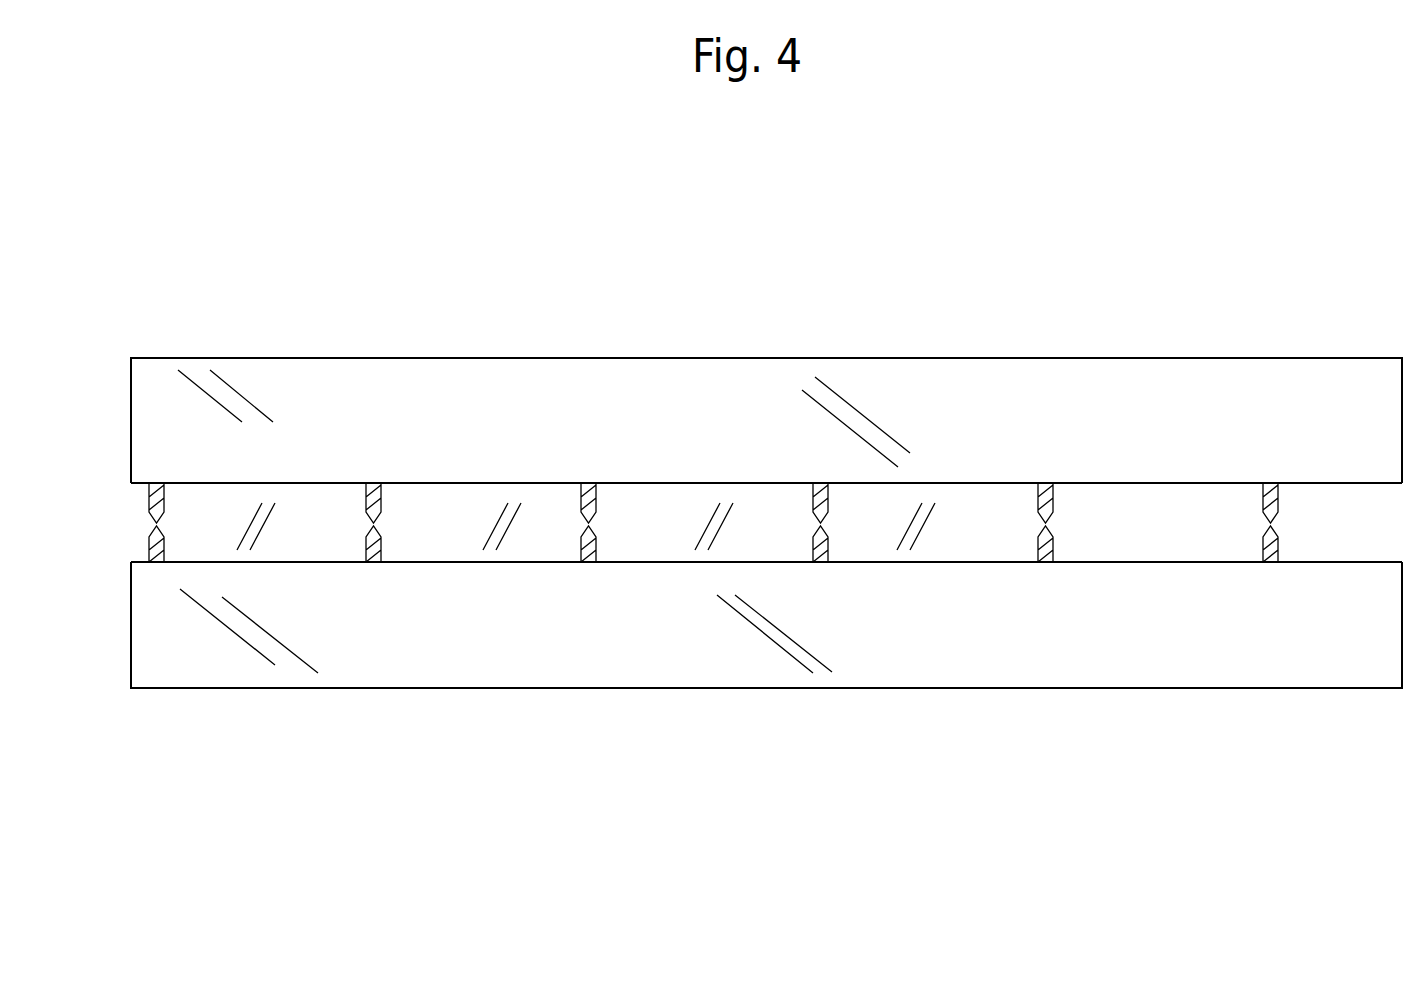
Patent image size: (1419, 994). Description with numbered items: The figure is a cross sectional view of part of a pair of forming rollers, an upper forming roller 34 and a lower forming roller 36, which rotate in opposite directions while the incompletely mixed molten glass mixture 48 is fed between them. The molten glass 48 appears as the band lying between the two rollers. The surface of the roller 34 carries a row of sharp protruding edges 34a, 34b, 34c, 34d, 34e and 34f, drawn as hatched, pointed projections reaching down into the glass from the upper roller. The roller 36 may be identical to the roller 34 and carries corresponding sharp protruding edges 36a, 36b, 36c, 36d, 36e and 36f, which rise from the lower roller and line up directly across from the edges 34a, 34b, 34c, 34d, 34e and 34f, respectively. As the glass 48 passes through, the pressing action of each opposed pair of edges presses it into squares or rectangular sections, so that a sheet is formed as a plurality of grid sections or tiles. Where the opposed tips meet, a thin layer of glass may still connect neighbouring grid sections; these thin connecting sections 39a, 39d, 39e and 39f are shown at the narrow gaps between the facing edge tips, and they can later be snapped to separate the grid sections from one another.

The forming roller 34 is at (678, 380).
The forming roller 36 is at (649, 679).
The molten glass mixture 48 is at (478, 507).
The sharp protruding edge 34a is at (150, 498).
The sharp protruding edge 34b is at (383, 487).
The sharp protruding edge 34c is at (599, 483).
The sharp protruding edge 34d is at (815, 483).
The sharp protruding edge 34e is at (1053, 483).
The sharp protruding edge 34f is at (1268, 483).
The sharp protruding edge 36a is at (163, 547).
The sharp protruding edge 36b is at (383, 548).
The sharp protruding edge 36c is at (593, 562).
The sharp protruding edge 36d is at (823, 562).
The sharp protruding edge 36e is at (1050, 562).
The sharp protruding edge 36f is at (1268, 562).
The thin connecting glass section 39a is at (152, 530).
The thin connecting glass section 39d is at (828, 523).
The thin connecting glass section 39e is at (1053, 525).
The thin connecting glass section 39f is at (1276, 523).